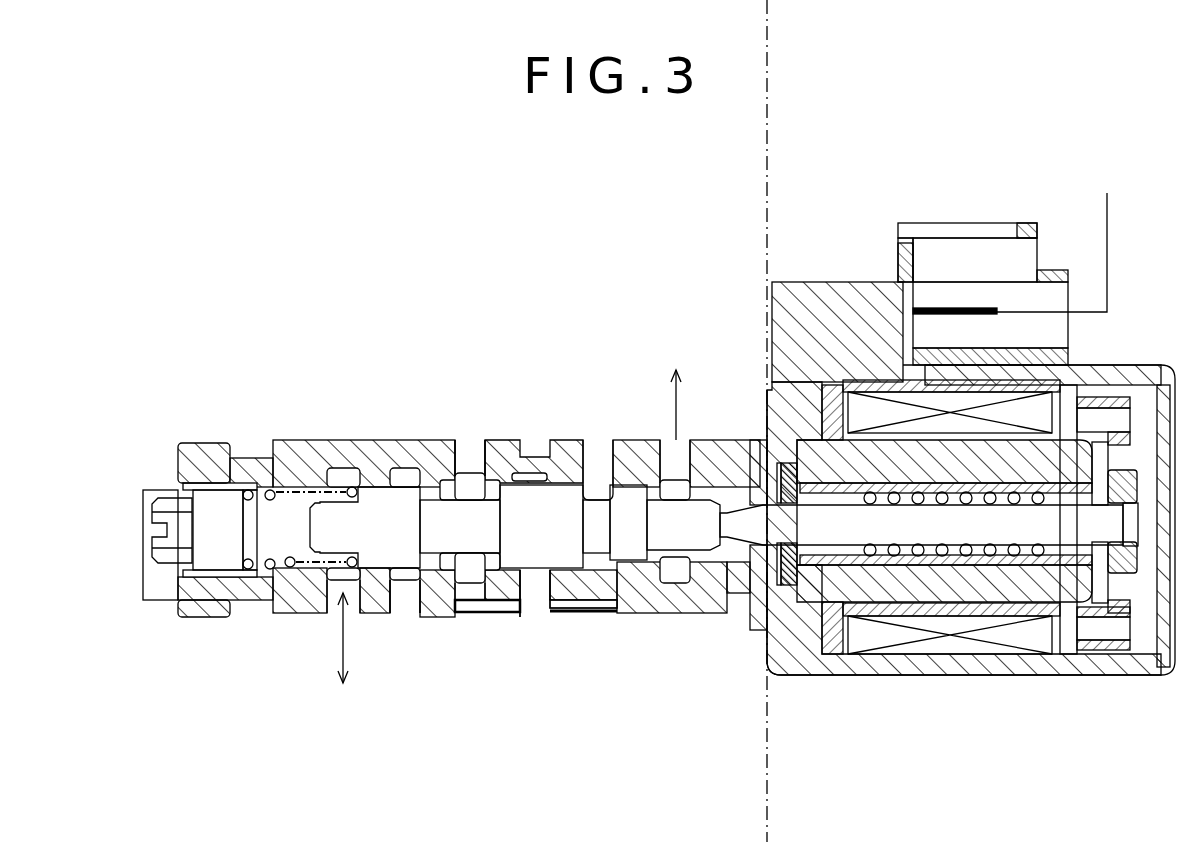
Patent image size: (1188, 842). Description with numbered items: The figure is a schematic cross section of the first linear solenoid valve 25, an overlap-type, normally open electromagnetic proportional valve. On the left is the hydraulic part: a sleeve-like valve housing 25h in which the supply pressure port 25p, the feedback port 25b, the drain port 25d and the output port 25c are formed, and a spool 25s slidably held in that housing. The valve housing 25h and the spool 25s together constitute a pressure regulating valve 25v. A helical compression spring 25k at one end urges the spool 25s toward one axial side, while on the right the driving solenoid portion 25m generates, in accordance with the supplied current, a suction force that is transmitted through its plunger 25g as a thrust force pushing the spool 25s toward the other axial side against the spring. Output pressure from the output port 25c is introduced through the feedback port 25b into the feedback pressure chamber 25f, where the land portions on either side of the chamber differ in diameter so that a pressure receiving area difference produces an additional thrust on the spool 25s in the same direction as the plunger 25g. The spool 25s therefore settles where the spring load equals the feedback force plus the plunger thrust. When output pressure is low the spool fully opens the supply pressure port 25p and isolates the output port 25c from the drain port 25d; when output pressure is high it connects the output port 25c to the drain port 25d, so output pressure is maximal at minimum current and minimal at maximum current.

The first linear solenoid valve 25 is at (707, 284).
The valve housing 25h is at (205, 462).
The pressure regulating valve 25v is at (218, 622).
The spool 25s is at (382, 502).
The helical compression spring 25k is at (287, 572).
The output port 25c is at (472, 237).
The feedback port 25b is at (472, 365).
The drain port 25d is at (407, 590).
The supply pressure port 25p is at (543, 603).
The feedback pressure chamber 25f is at (602, 606).
The plunger 25g is at (783, 518).
The driving solenoid portion 25m is at (971, 630).